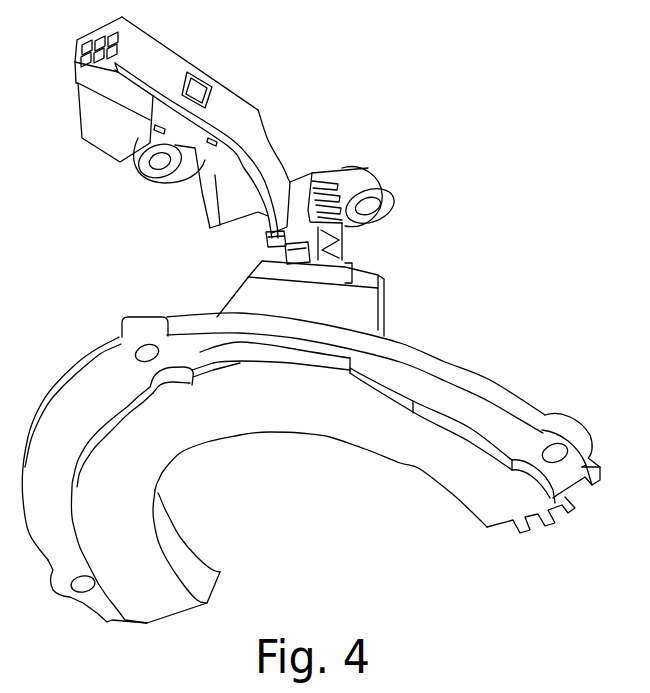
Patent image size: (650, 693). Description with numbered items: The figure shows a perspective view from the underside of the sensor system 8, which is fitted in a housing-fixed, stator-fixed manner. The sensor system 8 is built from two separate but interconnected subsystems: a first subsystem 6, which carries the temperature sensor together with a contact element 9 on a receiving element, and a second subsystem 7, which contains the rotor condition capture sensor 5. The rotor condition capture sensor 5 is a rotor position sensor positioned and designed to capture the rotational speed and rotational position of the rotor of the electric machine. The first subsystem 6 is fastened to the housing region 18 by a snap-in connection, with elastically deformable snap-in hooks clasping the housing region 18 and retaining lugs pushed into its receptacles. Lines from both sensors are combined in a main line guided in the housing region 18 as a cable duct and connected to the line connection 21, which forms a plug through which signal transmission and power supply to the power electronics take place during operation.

The rotor condition capture sensor 5 is at (404, 288).
The first subsystem 6 is at (258, 234).
The second subsystem 7 is at (526, 381).
The sensor system 8 is at (428, 118).
The contact element 9 is at (267, 257).
The housing region 18 is at (224, 118).
The line connection 21 is at (98, 155).